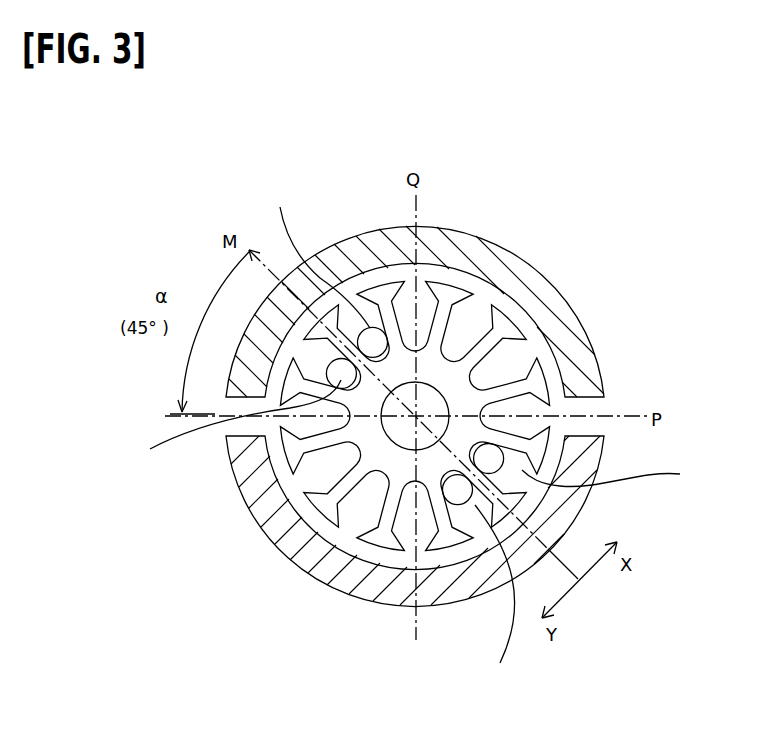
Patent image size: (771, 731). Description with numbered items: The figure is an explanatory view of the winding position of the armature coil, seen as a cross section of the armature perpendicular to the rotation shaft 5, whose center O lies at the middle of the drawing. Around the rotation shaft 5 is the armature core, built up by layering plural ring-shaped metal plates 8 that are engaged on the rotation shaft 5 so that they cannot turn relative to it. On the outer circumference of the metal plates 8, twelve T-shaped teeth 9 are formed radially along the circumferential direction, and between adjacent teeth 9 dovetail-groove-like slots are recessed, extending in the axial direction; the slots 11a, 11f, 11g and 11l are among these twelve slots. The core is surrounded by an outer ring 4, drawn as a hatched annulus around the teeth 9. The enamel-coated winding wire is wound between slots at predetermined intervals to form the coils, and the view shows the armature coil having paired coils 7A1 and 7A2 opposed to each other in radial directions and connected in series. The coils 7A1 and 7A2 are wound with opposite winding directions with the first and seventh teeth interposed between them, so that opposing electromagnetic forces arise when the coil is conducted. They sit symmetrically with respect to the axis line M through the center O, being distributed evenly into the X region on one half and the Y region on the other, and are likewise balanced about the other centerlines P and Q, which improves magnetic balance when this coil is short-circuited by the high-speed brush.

The yoke 4 is at (520, 275).
The rotation shaft 5 is at (383, 451).
The coil 7A1 is at (347, 325).
The coil 7A2 is at (350, 415).
The metal plate 8 is at (452, 289).
The tooth 9 is at (515, 387).
The lead wire 11a is at (317, 257).
The lead wire 11f is at (617, 480).
The lead wire 11g is at (496, 599).
The lead wire 11l is at (226, 427).